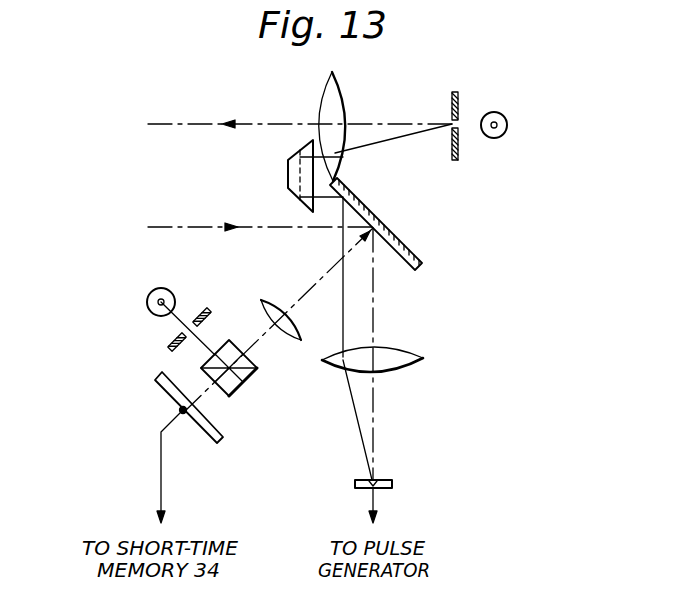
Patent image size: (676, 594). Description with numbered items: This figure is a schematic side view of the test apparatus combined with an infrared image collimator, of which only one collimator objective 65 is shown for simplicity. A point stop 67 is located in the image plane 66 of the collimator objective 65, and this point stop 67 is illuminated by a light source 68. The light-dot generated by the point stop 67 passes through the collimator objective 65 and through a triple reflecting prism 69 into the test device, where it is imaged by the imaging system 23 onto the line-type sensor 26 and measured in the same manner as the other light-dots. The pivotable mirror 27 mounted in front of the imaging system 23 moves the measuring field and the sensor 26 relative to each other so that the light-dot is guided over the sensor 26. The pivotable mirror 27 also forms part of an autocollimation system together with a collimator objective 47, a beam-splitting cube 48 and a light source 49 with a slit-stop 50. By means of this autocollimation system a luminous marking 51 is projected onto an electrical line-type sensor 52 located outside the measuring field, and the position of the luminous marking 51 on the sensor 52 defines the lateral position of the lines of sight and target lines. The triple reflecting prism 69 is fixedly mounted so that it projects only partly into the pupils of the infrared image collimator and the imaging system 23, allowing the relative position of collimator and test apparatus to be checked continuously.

The imaging system 23 is at (397, 358).
The line-type sensor 26 is at (381, 482).
The pivotable mirror 27 is at (388, 234).
The collimator objective 47 is at (273, 305).
The beam-splitting cube 48 is at (232, 378).
The light source 49 is at (151, 293).
The slit-stop 50 is at (170, 343).
The luminous marking 51 is at (190, 322).
The electrical line-type sensor 52 is at (172, 391).
The collimator objective 65 is at (328, 97).
The image plane 66 is at (452, 102).
The point stop 67 is at (459, 131).
The light source 68 is at (507, 125).
The triple reflecting prism 69 is at (293, 172).